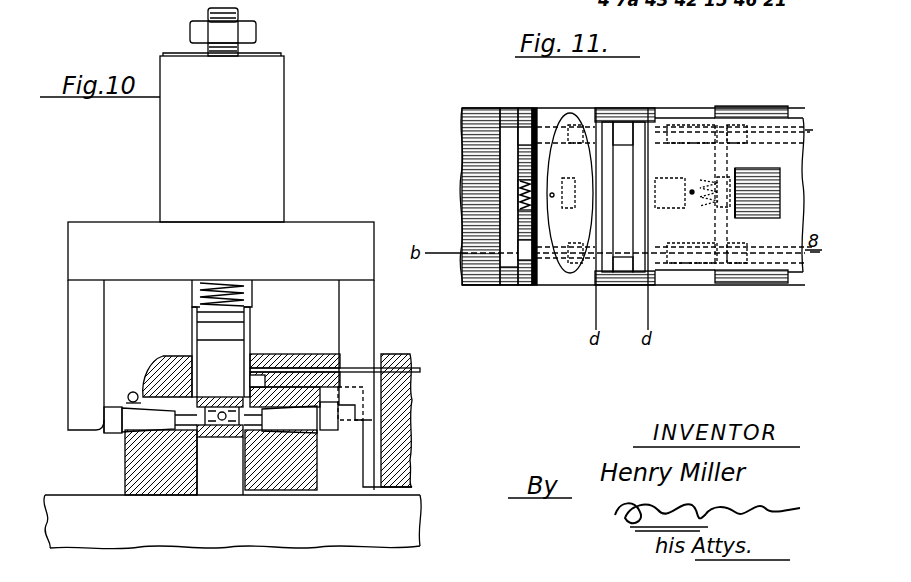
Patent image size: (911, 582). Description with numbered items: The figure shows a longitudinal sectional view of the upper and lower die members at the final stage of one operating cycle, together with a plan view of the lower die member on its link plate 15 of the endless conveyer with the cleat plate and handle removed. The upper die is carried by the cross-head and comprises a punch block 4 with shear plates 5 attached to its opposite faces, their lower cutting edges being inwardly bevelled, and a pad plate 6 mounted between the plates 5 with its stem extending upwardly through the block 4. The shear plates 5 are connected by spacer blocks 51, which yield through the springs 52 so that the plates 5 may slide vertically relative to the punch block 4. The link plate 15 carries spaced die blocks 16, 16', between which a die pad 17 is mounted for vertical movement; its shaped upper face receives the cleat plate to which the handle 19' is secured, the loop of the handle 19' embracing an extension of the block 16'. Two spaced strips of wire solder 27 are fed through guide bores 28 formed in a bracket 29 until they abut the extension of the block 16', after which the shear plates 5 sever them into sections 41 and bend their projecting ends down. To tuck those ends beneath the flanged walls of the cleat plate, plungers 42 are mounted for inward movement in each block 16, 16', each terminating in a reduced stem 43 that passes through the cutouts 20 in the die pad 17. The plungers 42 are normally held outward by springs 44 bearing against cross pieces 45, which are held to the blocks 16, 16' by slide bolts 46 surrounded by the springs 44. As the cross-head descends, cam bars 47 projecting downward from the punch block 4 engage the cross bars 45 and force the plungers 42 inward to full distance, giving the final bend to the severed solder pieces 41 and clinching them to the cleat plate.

In FIG. 10, the punch block 4 is at (117, 257).
In FIG. 10, the shear plates 5 is at (248, 333).
In FIG. 10, the pad plate 6 is at (338, 406).
In FIG. 10, the link plate 15 is at (233, 522).
In FIG. 10, the die block 16 is at (368, 460).
In FIG. 11, the die block 16 is at (737, 175).
In FIG. 10, the die block 16' is at (75, 488).
In FIG. 11, the die block 16' is at (532, 176).
In FIG. 10, the die pad 17 is at (293, 483).
In FIG. 11, the die pad 17 is at (623, 130).
In FIG. 10, the handle 19' is at (111, 379).
In FIG. 10, the cutout 20 is at (137, 475).
In FIG. 10, the wire solder strips 27 is at (420, 367).
In FIG. 10, the guide bores 28 is at (420, 371).
In FIG. 10, the bracket 29 is at (412, 393).
In FIG. 10, the severed sections of wire solder 41 is at (104, 430).
In FIG. 10, the plungers 42 is at (157, 415).
In FIG. 10, the reduced stem 43 is at (127, 445).
In FIG. 11, the springs 44 is at (520, 185).
In FIG. 10, the cross pieces 45 is at (110, 430).
In FIG. 11, the cross pieces 45 is at (525, 160).
In FIG. 11, the slide bolts 46 is at (553, 193).
In FIG. 10, the cam bars 47 is at (93, 318).
In FIG. 10, the spacer blocks 51 is at (213, 315).
In FIG. 10, the springs 52 is at (213, 297).